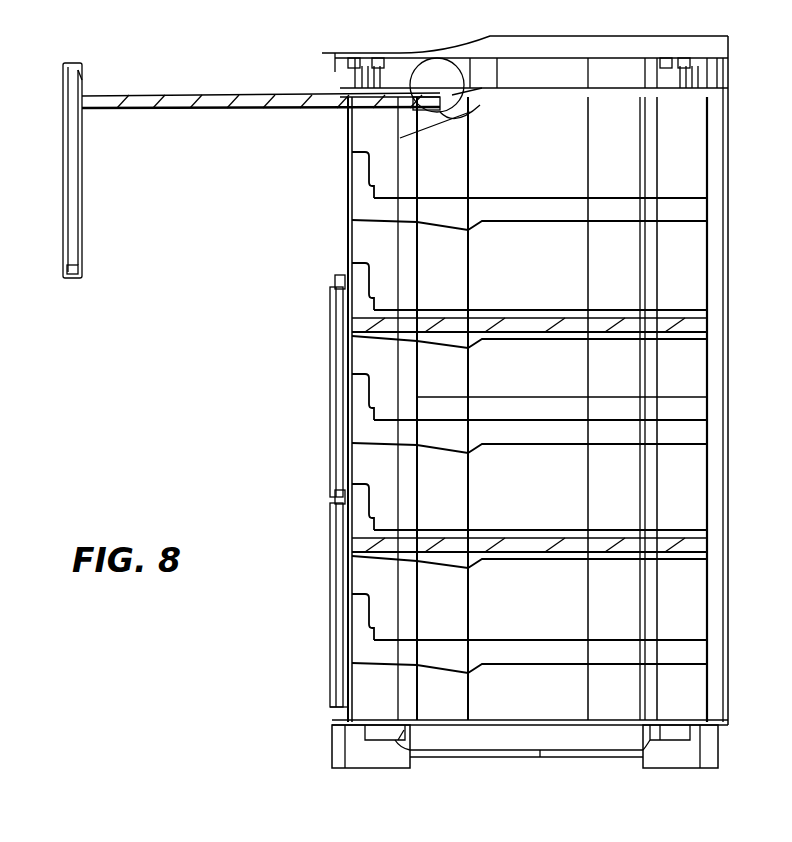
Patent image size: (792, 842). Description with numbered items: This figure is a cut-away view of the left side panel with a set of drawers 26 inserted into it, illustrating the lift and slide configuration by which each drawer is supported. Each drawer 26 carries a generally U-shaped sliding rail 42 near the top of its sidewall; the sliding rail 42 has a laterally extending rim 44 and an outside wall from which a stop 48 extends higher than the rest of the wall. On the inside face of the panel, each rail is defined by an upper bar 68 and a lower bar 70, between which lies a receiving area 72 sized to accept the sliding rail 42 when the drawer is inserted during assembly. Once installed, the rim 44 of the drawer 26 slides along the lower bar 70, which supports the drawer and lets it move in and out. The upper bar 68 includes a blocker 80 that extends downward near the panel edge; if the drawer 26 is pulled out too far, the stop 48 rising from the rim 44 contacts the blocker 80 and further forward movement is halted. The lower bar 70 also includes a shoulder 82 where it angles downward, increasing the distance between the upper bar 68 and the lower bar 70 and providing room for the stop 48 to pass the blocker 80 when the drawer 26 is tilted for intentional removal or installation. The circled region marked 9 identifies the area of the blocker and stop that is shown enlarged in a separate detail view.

The detail view circle (FIG. 9) 9 is at (414, 62).
The drawer 26 is at (83, 255).
The sliding rail 42 is at (168, 94).
The rim 44 is at (126, 110).
The stop 48 is at (460, 85).
The upper bar 68 is at (670, 198).
The lower bar 70 is at (670, 222).
The receiving area 72 is at (338, 213).
The blocker 80 is at (410, 204).
The shoulder 82 is at (455, 230).